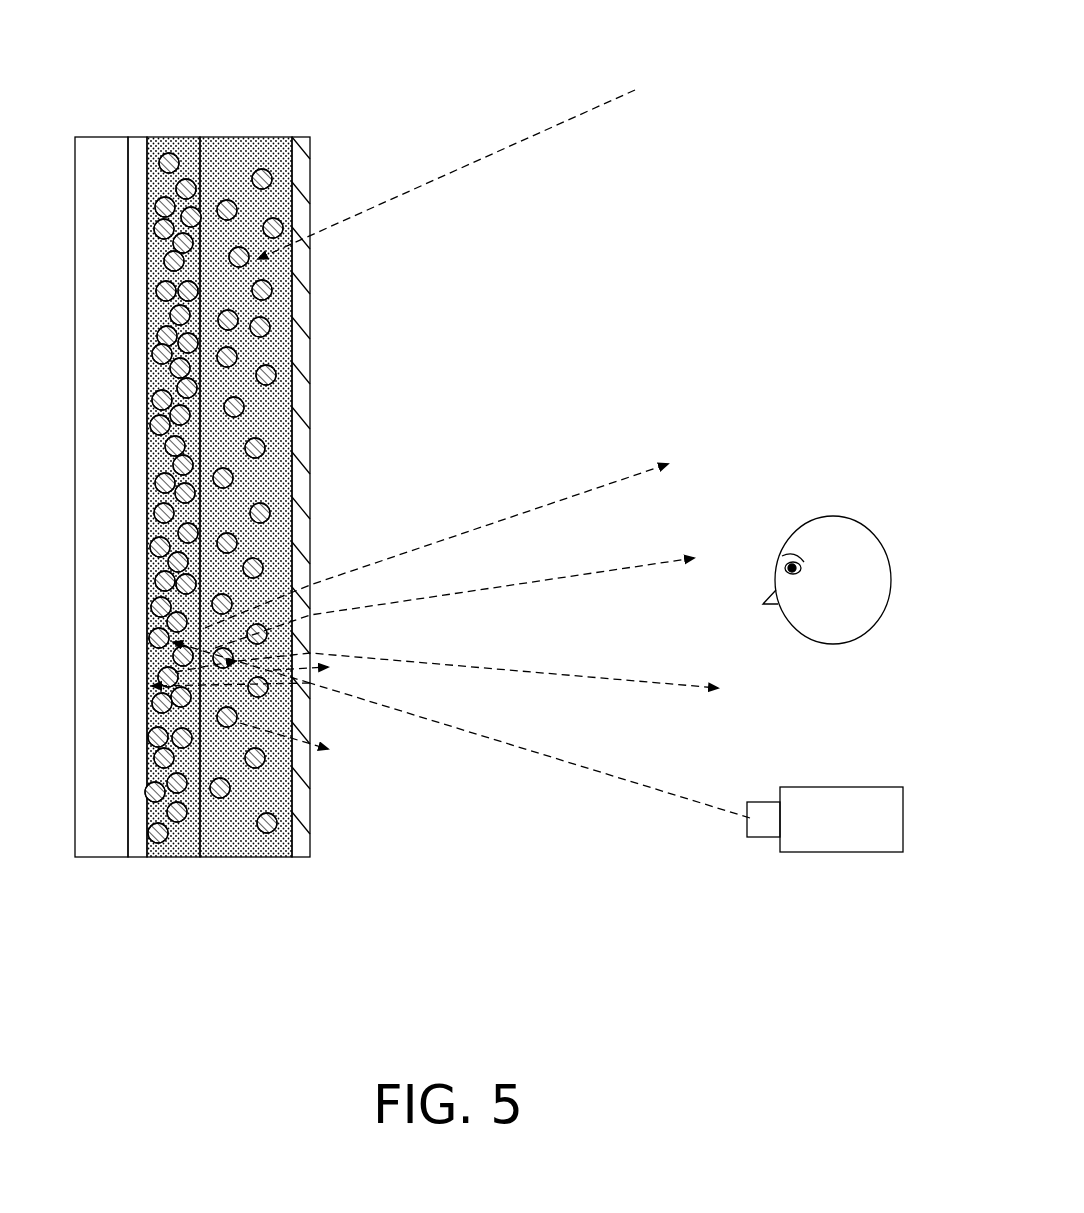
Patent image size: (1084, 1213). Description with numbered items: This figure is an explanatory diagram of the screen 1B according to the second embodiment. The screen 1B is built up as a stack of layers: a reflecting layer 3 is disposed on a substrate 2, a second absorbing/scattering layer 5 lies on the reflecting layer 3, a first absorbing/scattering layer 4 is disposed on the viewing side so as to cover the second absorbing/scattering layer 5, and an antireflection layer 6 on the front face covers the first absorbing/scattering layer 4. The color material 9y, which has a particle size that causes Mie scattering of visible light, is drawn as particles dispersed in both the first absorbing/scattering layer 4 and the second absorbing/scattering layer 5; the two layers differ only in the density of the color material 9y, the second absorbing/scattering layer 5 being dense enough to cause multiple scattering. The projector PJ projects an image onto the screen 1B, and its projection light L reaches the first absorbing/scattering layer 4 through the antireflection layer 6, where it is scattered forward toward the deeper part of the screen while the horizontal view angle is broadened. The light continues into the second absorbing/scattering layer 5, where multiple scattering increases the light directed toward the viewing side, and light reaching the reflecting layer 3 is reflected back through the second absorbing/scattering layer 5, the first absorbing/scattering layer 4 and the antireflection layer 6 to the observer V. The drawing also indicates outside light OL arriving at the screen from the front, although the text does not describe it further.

The screen 1B is at (366, 52).
The substrate 2 is at (98, 850).
The reflecting layer 3 is at (132, 850).
The first absorbing/scattering layer 4 is at (240, 850).
The second absorbing/scattering layer 5 is at (170, 850).
The antireflection layer 6 is at (300, 850).
The color material 9y is at (160, 150).
The outside light OL is at (442, 178).
The projection light L is at (490, 740).
The observer V is at (833, 516).
The projector PJ is at (840, 852).